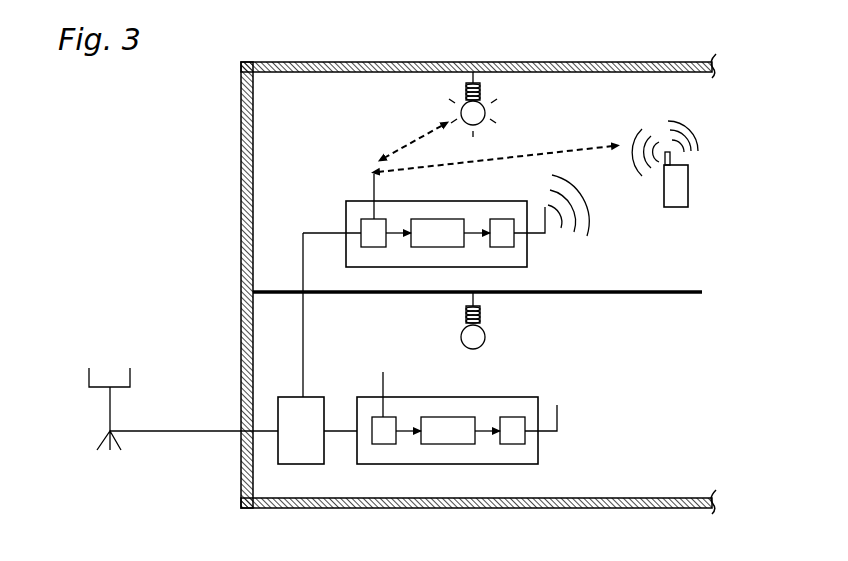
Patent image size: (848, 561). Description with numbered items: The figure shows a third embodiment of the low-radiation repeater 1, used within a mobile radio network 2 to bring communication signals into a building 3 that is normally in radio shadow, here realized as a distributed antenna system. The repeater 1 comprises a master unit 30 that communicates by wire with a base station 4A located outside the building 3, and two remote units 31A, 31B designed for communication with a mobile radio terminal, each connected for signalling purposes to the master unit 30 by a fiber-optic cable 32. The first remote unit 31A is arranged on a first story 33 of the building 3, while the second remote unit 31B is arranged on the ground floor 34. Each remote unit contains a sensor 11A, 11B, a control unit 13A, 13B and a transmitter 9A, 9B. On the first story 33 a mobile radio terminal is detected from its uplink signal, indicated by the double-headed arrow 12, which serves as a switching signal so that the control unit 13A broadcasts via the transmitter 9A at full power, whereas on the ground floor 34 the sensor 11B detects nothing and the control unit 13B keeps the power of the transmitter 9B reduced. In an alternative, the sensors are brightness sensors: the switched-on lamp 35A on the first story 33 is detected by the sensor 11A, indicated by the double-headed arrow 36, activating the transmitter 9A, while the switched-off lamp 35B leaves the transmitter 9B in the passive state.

The repeater 1 is at (648, 355).
The mobile radio network 2 is at (154, 216).
The building 3 is at (430, 62).
The base station 4A is at (112, 410).
The transmitter 9A is at (502, 219).
The transmitter 9B is at (511, 417).
The sensor 11A is at (386, 220).
The sensor 11B is at (396, 418).
The double-headed arrow 12 is at (549, 153).
The control unit 13A is at (445, 220).
The control unit 13B is at (460, 417).
The master unit 30 is at (302, 464).
The first remote unit 31A is at (450, 220).
The second remote unit 31B is at (487, 416).
The fiber-optic cable 32 is at (303, 336).
The first story 33 is at (712, 230).
The ground floor 34 is at (709, 434).
The lamp 35A is at (481, 92).
The lamp 35B is at (481, 322).
The double-headed arrow 36 is at (412, 148).